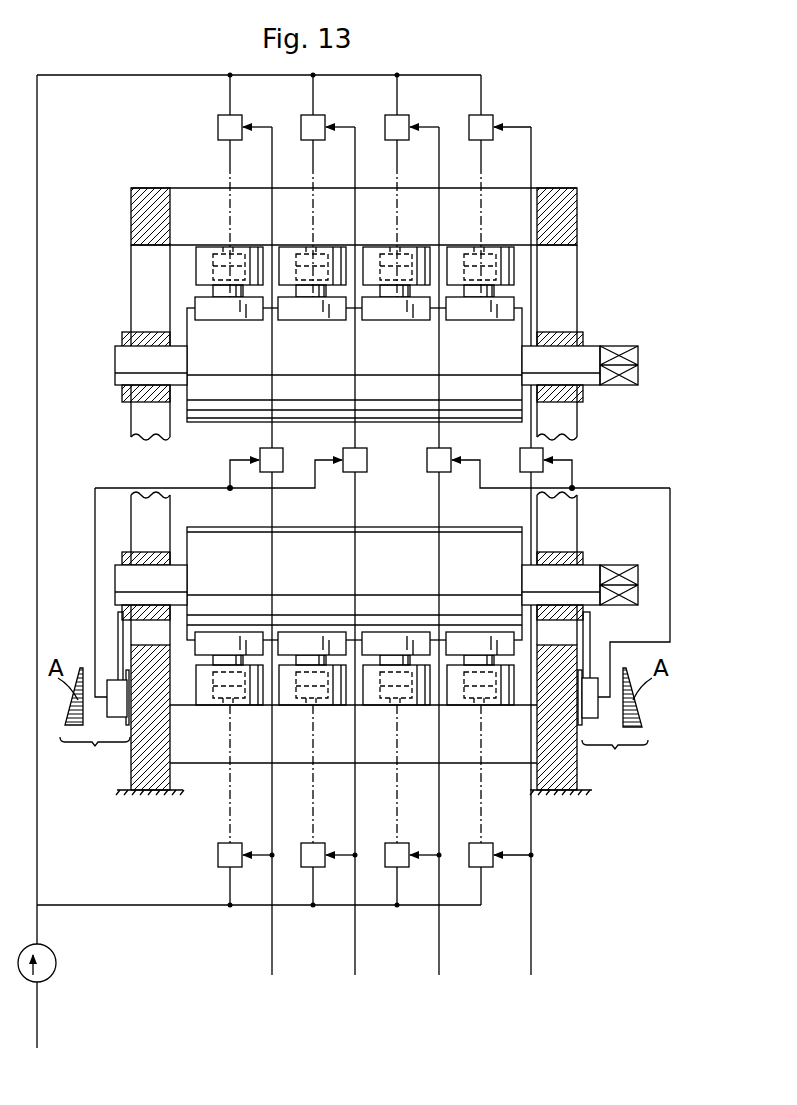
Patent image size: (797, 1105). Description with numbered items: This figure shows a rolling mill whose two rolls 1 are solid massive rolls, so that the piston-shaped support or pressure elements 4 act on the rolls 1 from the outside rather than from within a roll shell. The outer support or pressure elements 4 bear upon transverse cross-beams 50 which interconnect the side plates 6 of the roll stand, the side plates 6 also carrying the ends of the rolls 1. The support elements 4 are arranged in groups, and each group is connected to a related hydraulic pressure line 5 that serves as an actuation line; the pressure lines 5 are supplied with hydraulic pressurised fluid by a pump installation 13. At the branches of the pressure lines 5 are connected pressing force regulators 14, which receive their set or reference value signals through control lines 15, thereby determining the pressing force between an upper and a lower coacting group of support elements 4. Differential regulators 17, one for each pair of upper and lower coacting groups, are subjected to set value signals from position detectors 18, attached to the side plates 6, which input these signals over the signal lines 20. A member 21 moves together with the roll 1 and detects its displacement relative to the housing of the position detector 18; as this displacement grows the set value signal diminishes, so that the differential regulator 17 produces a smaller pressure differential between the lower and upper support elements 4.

The roll 1 is at (383, 427).
The support or pressure element 4 is at (212, 310).
The hydraulic pressure line 5 is at (40, 455).
The side plate 6 is at (140, 262).
The pump installation 13 is at (55, 980).
The pressing force regulator 14 is at (218, 128).
The control line 15 is at (272, 948).
The differential regulator 17 is at (283, 460).
The position detector 18 is at (116, 722).
The signal line 20 is at (180, 488).
The member 21 is at (118, 630).
The cross-beam 50 is at (210, 195).